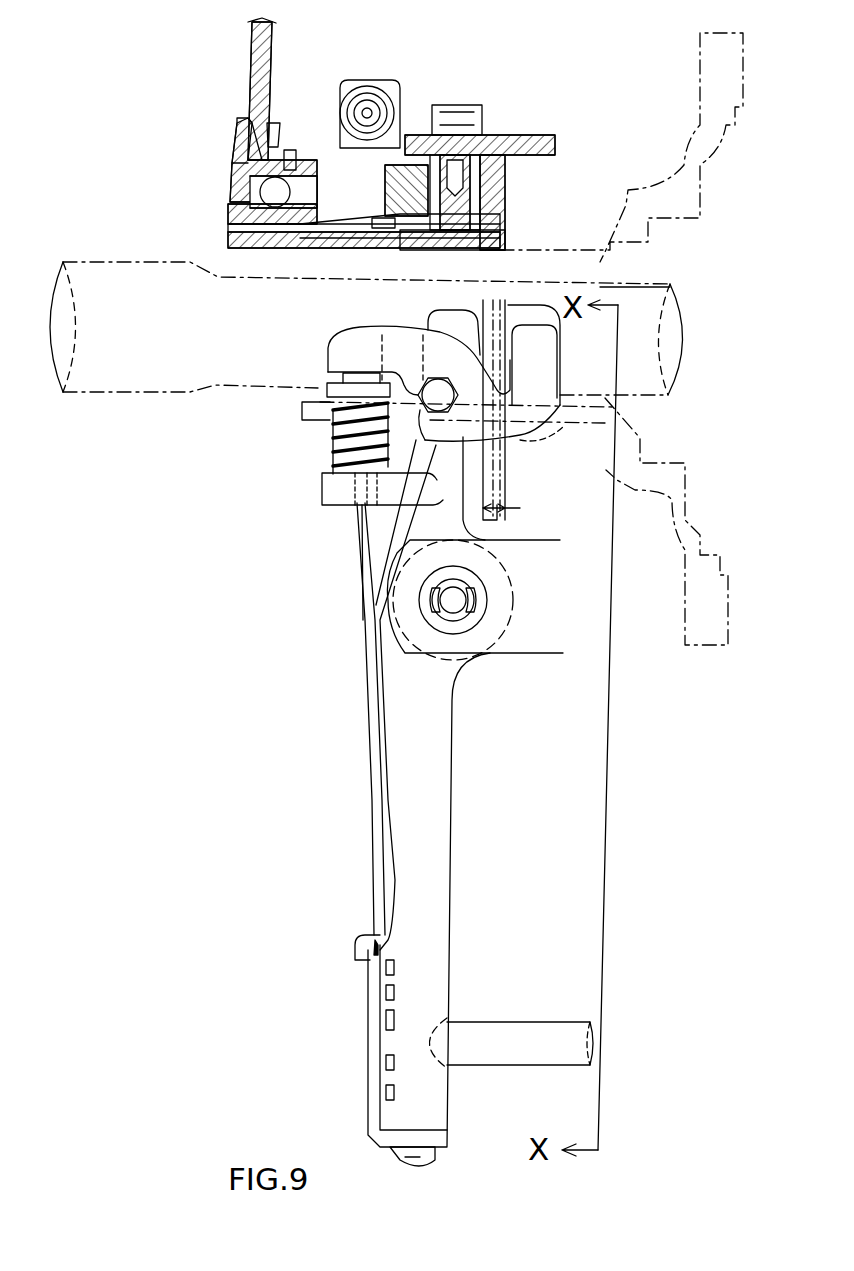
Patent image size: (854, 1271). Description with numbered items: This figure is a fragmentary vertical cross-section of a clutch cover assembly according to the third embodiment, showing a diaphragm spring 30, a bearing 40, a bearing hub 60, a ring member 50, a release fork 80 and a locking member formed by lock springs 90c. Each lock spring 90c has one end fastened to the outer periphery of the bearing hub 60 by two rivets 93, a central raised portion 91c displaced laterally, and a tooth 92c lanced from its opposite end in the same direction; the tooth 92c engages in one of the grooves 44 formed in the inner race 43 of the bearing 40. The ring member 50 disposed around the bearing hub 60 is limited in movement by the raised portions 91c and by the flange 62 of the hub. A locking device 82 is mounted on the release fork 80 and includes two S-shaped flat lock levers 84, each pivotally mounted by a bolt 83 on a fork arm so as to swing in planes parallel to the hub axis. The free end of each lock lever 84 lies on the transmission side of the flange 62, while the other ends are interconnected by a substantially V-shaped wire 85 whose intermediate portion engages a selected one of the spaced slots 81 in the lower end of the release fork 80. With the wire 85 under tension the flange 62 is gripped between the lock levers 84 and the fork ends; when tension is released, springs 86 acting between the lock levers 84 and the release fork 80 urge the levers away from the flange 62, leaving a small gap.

The diaphragm spring 30 is at (268, 52).
The bearing 40 is at (220, 140).
The inner race 43 is at (233, 214).
The grooves 44 is at (252, 195).
The ring member 50 is at (405, 175).
The bearing hub 60 is at (358, 235).
The flange 62 is at (510, 218).
The release fork 80 is at (440, 875).
The slots 81 is at (380, 1112).
The locking device 82 is at (592, 390).
The bolts 83 is at (385, 545).
The lock levers 84 is at (520, 410).
The wire 85 is at (372, 805).
The springs 86 is at (345, 445).
The lock spring 90c is at (340, 240).
The raised portion 91c is at (378, 227).
The tooth 92c is at (305, 232).
The rivets 93 is at (478, 158).